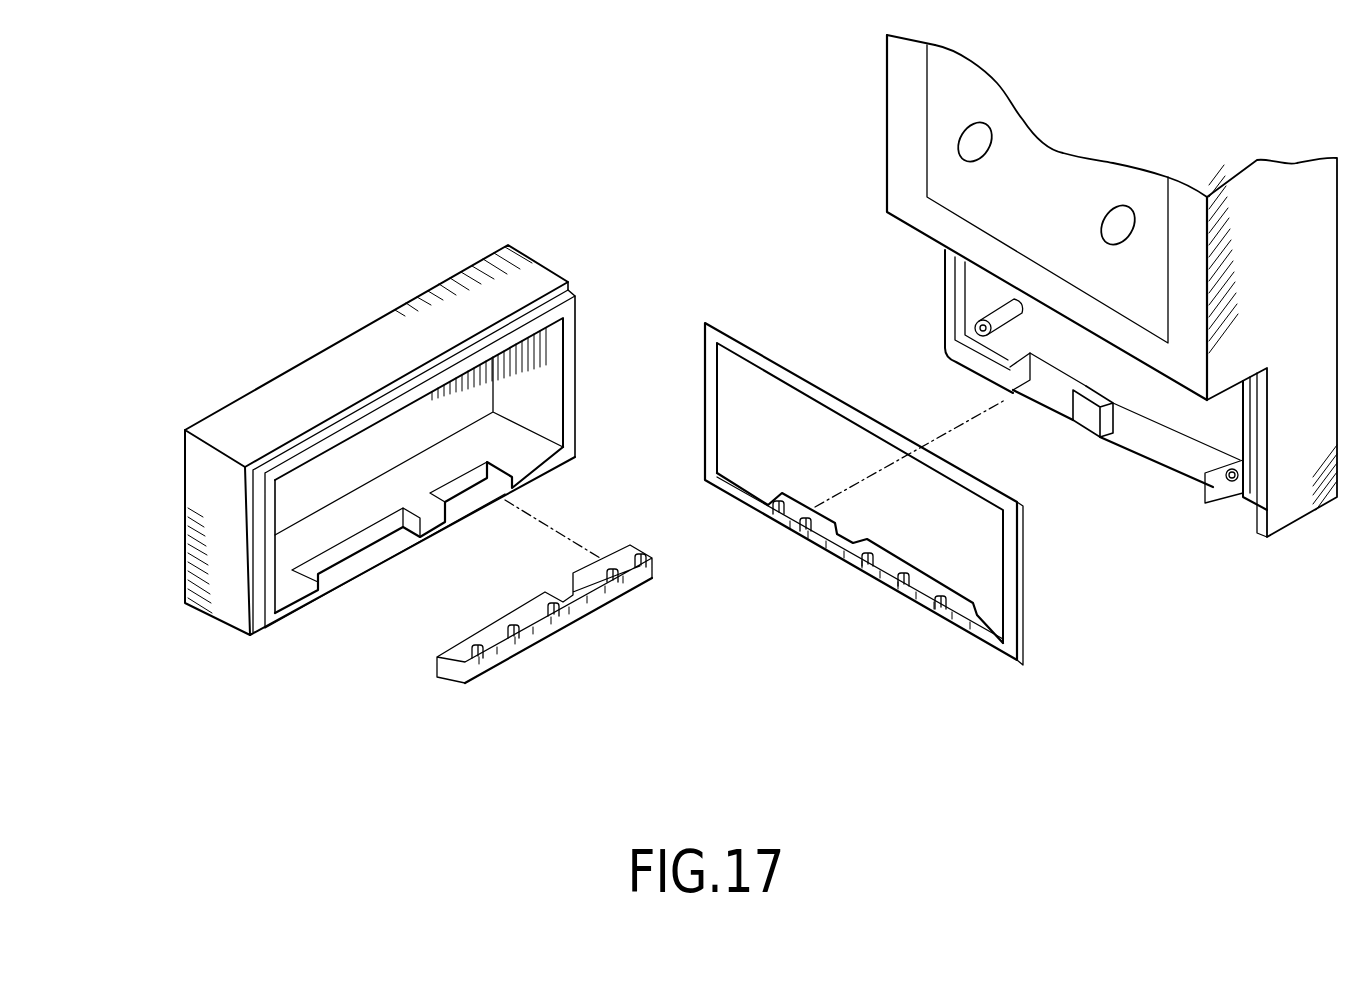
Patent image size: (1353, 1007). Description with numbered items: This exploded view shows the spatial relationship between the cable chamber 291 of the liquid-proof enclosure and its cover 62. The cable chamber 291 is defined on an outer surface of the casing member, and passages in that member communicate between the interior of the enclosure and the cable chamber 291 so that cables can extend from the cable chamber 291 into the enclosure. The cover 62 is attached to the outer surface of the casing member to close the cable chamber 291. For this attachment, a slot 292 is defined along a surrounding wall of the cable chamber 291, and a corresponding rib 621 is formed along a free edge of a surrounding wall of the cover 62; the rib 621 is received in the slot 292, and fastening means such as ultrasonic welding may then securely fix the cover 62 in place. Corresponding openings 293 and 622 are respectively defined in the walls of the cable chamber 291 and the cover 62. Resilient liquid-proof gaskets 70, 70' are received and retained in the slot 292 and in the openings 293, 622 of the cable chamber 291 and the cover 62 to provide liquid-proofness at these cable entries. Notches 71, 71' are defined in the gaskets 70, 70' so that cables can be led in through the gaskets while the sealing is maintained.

The cover 62 is at (368, 348).
The rib 621 is at (472, 356).
The opening 622 is at (485, 493).
The resilient liquid-proof gasket 70' is at (547, 606).
The notch 71' is at (564, 644).
The resilient liquid-proof gasket 70 is at (864, 478).
The notch 71 is at (859, 593).
The opening 293 is at (1048, 380).
The cable chamber 291 is at (1127, 390).
The slot 292 is at (1255, 510).